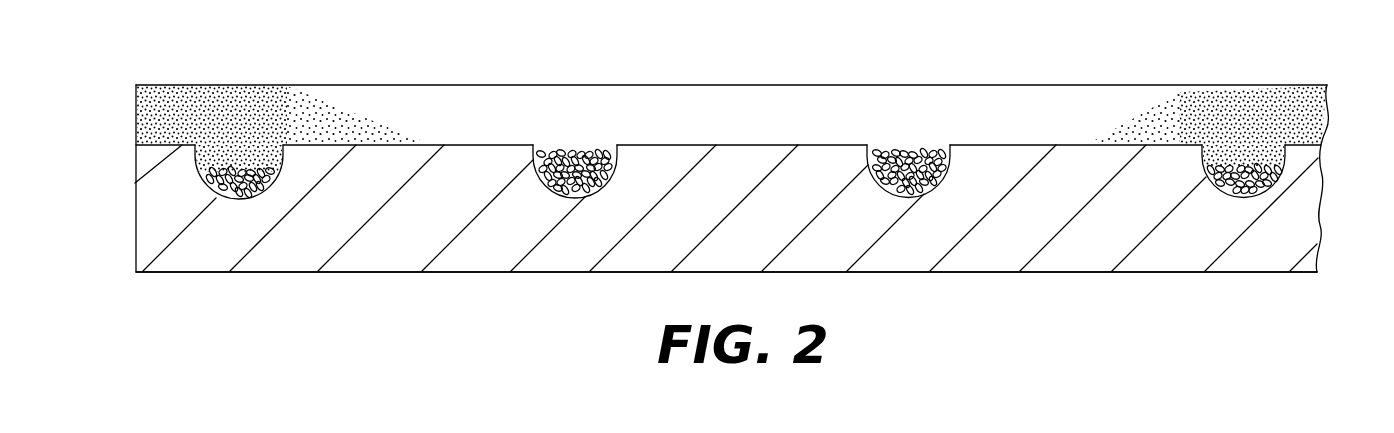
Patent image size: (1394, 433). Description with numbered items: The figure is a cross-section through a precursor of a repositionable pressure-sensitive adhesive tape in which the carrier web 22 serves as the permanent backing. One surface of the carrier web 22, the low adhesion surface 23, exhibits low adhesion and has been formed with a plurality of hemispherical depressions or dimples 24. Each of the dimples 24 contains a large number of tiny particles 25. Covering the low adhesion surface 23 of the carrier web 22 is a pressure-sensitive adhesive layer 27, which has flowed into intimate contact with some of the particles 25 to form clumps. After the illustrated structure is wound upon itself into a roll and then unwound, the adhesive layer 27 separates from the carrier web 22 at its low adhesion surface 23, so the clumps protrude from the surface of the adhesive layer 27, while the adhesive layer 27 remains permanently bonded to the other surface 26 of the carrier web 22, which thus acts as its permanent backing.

The carrier web 22 is at (1307, 212).
The low adhesion surface 23 is at (1327, 118).
The hemispherical depressions or dimples 24 is at (545, 188).
The tiny particles 25 is at (596, 195).
The other surface of carrier web 26 is at (997, 272).
The pressure-sensitive adhesive layer 27 is at (1242, 98).